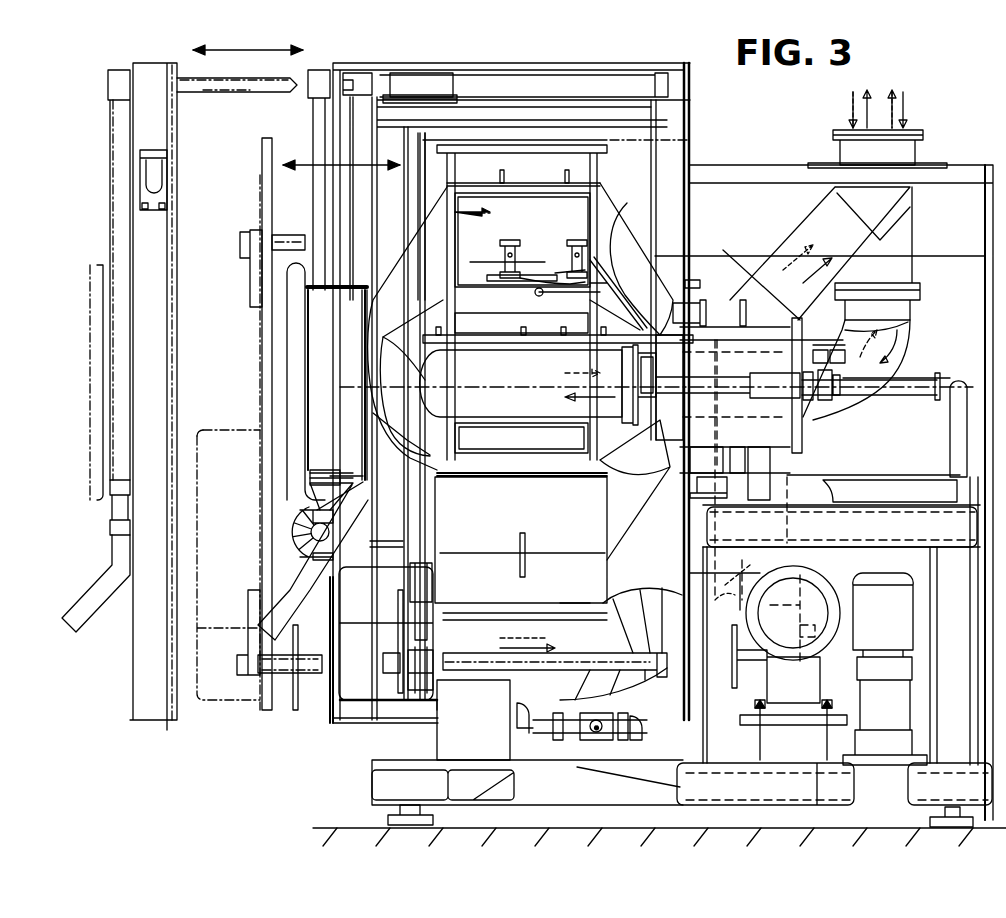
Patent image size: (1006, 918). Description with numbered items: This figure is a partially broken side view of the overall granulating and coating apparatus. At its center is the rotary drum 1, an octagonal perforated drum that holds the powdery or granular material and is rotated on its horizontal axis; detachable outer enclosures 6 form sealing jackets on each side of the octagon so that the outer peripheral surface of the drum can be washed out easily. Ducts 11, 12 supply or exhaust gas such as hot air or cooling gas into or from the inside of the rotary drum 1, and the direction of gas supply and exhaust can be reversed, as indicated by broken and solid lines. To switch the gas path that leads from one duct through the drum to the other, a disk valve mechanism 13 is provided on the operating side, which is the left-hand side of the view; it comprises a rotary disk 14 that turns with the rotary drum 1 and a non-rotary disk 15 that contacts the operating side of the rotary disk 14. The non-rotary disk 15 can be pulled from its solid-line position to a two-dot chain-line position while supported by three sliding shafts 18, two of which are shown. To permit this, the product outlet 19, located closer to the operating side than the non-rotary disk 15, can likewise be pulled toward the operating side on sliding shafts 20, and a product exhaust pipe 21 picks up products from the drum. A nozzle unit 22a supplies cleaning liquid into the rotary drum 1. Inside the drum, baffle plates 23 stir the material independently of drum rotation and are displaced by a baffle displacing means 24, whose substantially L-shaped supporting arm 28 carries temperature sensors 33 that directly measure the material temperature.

The rotary drum 1 is at (664, 242).
The detachable outer enclosure 6 is at (414, 590).
The duct 11 is at (827, 242).
The duct 12 is at (912, 214).
The disk valve mechanism 13 is at (447, 10).
The rotary disk 14 is at (433, 138).
The non-rotary disk 15 is at (420, 138).
The sliding shaft 18 is at (258, 680).
The product outlet 19 is at (98, 263).
The sliding shaft 20 is at (203, 94).
The product exhaust pipe 21 is at (86, 622).
The nozzle unit 22a is at (440, 338).
The baffle plate 23 is at (532, 268).
The baffle displacing means 24 is at (554, 258).
The supporting arm 28 is at (630, 214).
The temperature sensor 33 is at (472, 286).